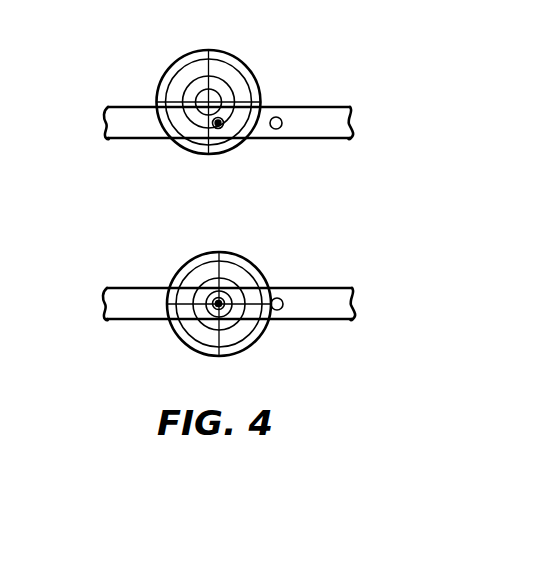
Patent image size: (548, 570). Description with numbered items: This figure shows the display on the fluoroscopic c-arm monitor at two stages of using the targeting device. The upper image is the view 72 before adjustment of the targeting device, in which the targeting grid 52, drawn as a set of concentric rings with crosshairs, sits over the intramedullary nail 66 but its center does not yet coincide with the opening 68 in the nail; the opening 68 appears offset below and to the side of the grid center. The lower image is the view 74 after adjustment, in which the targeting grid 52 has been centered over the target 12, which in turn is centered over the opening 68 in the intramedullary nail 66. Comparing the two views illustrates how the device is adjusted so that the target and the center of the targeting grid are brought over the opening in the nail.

The target 12 is at (211, 311).
The targeting grid 52 is at (233, 56).
The intramedullary nail 66 is at (125, 107).
The opening 68 is at (223, 127).
The view before adjustment 72 is at (231, 103).
The view after adjustment 74 is at (239, 299).